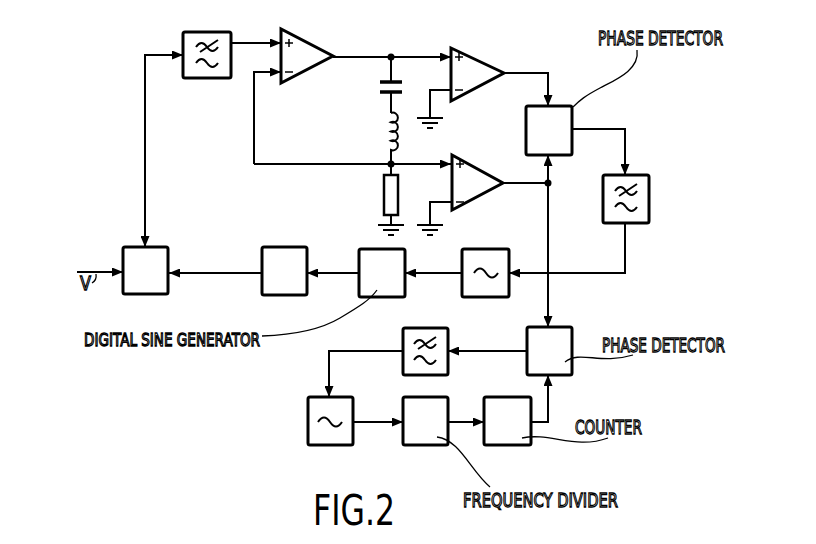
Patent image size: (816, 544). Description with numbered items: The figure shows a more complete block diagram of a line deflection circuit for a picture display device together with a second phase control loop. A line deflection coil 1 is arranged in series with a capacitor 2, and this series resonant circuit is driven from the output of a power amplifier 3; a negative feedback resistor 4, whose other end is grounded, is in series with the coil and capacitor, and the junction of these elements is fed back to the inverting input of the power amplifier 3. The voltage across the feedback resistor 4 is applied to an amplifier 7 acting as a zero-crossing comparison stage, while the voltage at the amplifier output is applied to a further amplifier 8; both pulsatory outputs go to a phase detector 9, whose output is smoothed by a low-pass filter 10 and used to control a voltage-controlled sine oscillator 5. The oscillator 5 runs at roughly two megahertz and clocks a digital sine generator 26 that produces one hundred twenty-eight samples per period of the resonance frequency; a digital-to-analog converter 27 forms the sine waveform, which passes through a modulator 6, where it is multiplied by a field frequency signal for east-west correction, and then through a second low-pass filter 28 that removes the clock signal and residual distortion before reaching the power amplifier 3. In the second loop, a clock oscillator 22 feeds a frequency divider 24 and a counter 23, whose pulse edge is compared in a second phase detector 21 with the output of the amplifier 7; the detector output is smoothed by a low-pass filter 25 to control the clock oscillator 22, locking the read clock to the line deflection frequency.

The line deflection coil 1 is at (388, 128).
The capacitor 2 is at (398, 79).
The power amplifier 3 is at (308, 38).
The negative feedback resistor 4 is at (383, 197).
The voltage-controlled sine oscillator 5 is at (487, 249).
The modulator 6 is at (157, 295).
The amplifier 7 is at (473, 153).
The amplifier 8 is at (480, 55).
The phase detector 9 is at (558, 106).
The low-pass filter 10 is at (650, 200).
The second phase detector 21 is at (565, 327).
The clock oscillator 22 is at (331, 446).
The counter 23 is at (516, 446).
The frequency divider 24 is at (432, 446).
The low-pass filter 25 is at (427, 327).
The digital sine generator 26 is at (370, 249).
The digital-to-analog converter 27 is at (280, 247).
The second low-pass filter 28 is at (218, 32).